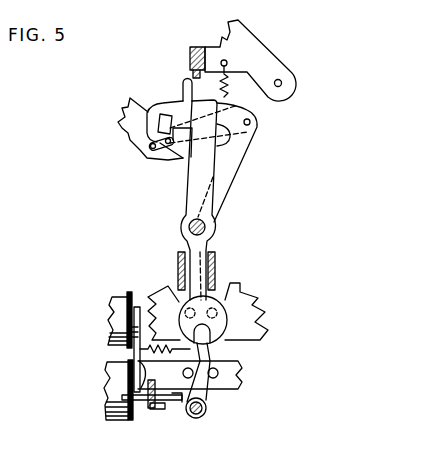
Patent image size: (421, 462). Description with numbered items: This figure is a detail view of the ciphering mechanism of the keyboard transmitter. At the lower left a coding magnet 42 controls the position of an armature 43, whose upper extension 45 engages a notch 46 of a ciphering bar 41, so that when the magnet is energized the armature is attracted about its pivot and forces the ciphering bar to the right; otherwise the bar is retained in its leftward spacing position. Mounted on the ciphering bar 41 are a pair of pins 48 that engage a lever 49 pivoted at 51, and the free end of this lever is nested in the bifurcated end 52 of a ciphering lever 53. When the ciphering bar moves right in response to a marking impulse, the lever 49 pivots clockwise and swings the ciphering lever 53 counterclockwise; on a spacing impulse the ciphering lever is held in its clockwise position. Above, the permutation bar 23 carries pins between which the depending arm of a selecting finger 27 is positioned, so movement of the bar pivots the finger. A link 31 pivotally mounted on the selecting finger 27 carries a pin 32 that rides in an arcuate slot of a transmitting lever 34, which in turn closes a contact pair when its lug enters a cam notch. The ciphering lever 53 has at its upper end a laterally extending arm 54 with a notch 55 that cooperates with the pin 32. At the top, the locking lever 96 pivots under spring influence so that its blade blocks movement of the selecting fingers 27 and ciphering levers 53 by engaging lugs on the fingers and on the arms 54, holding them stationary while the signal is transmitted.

The locking lever 96 is at (258, 52).
The laterally extending arm 54 is at (160, 110).
The notch 55 is at (167, 112).
The transmitting lever 34 is at (133, 128).
The link 31 is at (222, 143).
The selecting finger 27 is at (237, 160).
The pin 32 is at (181, 148).
The ciphering lever 53 is at (190, 190).
The coding magnet 42 is at (120, 297).
The armature 43 is at (137, 307).
The permutation bar 23 is at (265, 306).
The notch 46 is at (138, 360).
The bifurcated end 52 is at (220, 343).
The ciphering bar 41 is at (243, 383).
The pins 48 is at (207, 388).
The lever 49 is at (203, 401).
The upper extension 45 is at (155, 412).
The pivot 51 is at (203, 416).